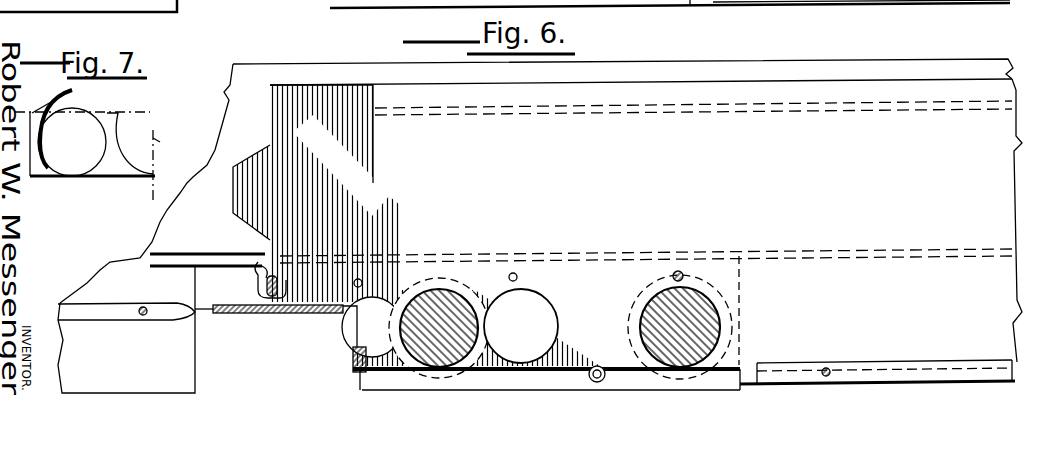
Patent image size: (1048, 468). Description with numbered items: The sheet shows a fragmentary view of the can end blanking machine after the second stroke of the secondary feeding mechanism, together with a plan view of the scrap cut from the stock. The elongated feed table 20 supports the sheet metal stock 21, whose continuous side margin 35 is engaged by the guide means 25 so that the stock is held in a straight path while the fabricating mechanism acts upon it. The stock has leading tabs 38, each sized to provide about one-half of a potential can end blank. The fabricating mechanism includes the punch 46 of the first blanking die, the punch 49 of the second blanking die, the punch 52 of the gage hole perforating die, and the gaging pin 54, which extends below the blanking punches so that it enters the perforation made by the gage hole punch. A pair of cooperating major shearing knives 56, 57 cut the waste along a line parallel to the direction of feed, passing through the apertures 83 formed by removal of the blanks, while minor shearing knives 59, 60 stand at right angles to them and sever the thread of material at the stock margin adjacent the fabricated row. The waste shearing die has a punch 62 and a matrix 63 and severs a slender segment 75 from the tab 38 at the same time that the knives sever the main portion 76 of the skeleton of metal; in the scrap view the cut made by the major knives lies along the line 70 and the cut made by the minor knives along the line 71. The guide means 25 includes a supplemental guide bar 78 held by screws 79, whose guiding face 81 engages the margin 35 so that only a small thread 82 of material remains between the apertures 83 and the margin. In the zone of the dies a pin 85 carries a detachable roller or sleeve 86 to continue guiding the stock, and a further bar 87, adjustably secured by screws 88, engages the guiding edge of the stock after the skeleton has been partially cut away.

In FIG. 6, the feed table 20 is at (915, 63).
In FIG. 6, the stock 21 is at (828, 174).
In FIG. 6, the guide means 25 is at (1005, 385).
In FIG. 6, the side margin 35 is at (690, 4).
In FIG. 6, the tab 38 is at (240, 196).
In FIG. 6, the punch 46 is at (680, 327).
In FIG. 6, the punch 49 is at (439, 328).
In FIG. 6, the punch 52 is at (683, 272).
In FIG. 6, the gaging pin 54 is at (517, 274).
In FIG. 6, the major shearing knife 56 is at (235, 313).
In FIG. 6, the major shearing knife 57 is at (210, 310).
In FIG. 6, the minor shearing knife 59 is at (352, 358).
In FIG. 6, the minor shearing knife 60 is at (360, 347).
In FIG. 6, the punch 62 is at (275, 280).
In FIG. 6, the matrix 63 is at (255, 258).
In FIG. 7, the line 70 is at (140, 104).
In FIG. 7, the line 71 is at (160, 142).
In FIG. 7, the segment 75 is at (40, 112).
In FIG. 7, the main portion 76 is at (43, 178).
In FIG. 6, the supplemental guide bar 78 is at (865, 382).
In FIG. 6, the screws 79 is at (828, 368).
In FIG. 6, the guiding face 81 is at (925, 340).
In FIG. 7, the thread 82 is at (72, 133).
In FIG. 6, the thread 82 is at (520, 366).
In FIG. 6, the aperture 83 is at (547, 309).
In FIG. 6, the pin 85 is at (596, 383).
In FIG. 6, the roller or sleeve 86 is at (607, 383).
In FIG. 6, the bar 87 is at (95, 322).
In FIG. 6, the screws 88 is at (142, 316).